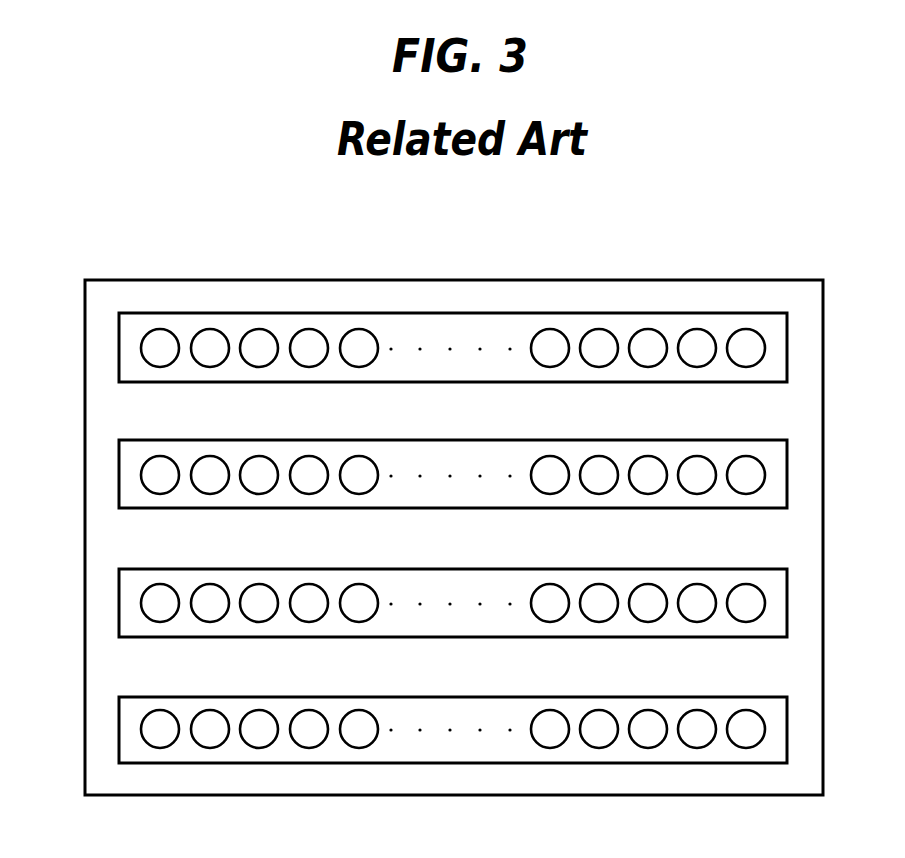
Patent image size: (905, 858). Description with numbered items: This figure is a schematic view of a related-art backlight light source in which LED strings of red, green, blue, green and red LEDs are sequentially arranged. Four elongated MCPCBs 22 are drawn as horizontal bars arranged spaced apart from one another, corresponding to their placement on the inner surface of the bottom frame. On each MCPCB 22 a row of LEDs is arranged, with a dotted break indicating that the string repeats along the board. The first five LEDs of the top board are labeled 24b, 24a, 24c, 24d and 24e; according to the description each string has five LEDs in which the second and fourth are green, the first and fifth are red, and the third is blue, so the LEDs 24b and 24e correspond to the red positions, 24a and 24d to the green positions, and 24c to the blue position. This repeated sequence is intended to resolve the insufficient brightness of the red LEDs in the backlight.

The MCPCB 22 is at (767, 320).
The light emitting element 24a is at (208, 328).
The light emitting element 24b is at (150, 328).
The light emitting element 24c is at (258, 330).
The light emitting element 24d is at (309, 330).
The light emitting element 24e is at (360, 330).